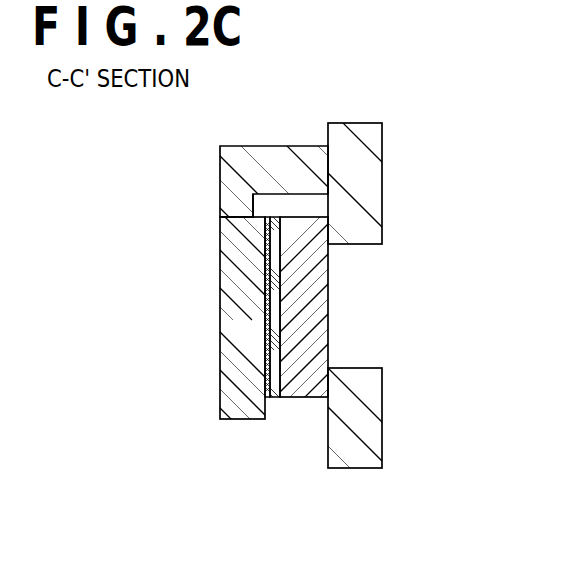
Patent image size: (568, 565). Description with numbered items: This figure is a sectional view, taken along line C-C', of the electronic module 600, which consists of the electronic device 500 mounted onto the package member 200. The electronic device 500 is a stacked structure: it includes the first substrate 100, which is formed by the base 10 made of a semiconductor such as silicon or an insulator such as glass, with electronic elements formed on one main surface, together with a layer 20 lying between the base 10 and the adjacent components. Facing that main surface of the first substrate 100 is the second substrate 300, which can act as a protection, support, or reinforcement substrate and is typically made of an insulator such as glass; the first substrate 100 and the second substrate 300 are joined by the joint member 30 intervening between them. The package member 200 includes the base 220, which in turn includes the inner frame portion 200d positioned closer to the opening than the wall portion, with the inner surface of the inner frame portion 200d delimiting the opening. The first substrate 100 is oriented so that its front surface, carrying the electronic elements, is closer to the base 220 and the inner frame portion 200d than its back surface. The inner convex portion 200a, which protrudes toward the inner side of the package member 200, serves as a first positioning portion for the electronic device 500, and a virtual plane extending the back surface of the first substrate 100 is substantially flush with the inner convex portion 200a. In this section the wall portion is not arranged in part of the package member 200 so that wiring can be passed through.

The base 10 is at (245, 320).
The functional layer 20 is at (268, 257).
The joint member 30 is at (265, 382).
The first substrate 100 is at (183, 240).
The package member 200 is at (222, 166).
The inner convex portion 200a is at (237, 207).
The inner frame portion 200d is at (340, 227).
The base 220 is at (381, 472).
The second substrate 300 is at (297, 237).
The electronic device 500 is at (123, 185).
The electronic module 600 is at (62, 150).